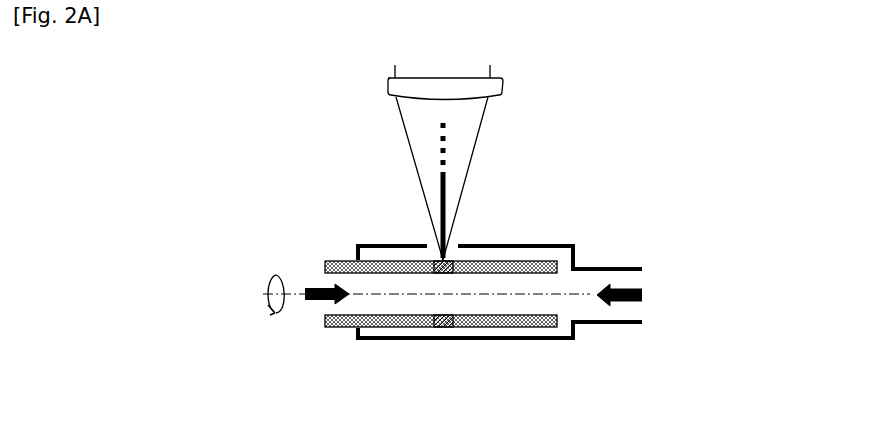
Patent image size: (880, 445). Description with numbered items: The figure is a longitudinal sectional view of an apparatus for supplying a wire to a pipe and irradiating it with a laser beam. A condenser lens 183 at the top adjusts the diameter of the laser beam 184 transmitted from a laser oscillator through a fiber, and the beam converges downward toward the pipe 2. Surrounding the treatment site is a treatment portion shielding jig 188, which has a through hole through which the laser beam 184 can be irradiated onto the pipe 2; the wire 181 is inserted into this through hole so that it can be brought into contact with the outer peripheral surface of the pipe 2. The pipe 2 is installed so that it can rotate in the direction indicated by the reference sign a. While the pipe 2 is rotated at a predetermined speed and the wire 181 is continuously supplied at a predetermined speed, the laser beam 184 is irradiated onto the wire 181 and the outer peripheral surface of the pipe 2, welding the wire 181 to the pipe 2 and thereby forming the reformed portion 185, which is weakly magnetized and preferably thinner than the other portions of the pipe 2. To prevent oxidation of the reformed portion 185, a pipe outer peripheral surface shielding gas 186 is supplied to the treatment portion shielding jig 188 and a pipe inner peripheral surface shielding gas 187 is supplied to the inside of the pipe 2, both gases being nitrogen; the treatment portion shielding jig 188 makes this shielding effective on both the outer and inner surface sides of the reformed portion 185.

The pipe 2 is at (517, 323).
The wire 181 is at (441, 190).
The condenser lens 183 is at (470, 87).
The laser beam 184 is at (467, 133).
The reformed portion 185 is at (441, 266).
The pipe outer peripheral surface shielding gas 186 is at (638, 288).
The pipe inner peripheral surface shielding gas 187 is at (315, 300).
The treatment portion shielding jig 188 is at (553, 245).
The rotation direction a is at (272, 274).